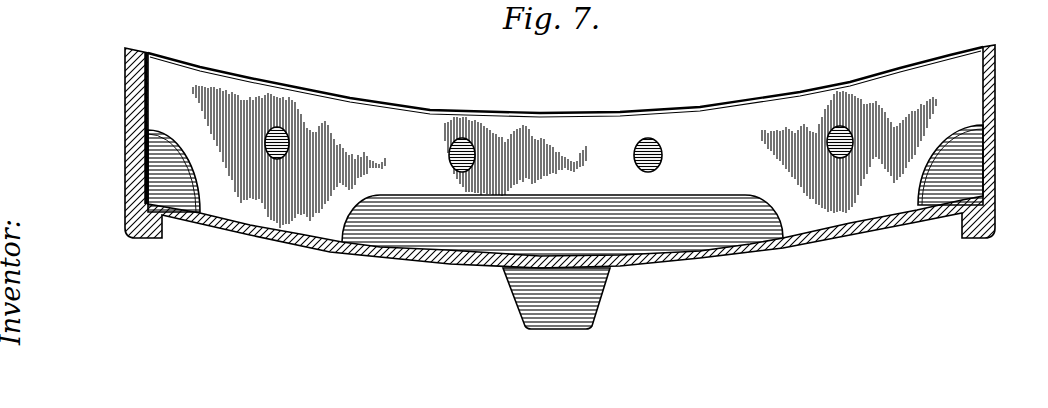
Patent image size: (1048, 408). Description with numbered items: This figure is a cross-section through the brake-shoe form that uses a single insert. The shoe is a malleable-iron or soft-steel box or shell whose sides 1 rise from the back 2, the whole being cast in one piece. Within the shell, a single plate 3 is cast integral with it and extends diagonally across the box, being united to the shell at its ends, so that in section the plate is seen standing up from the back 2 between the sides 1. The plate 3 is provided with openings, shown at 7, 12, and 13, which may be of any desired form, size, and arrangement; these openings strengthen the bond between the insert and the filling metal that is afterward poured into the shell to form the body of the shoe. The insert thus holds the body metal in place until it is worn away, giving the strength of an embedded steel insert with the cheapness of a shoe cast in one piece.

The sides 1 is at (133, 72).
The back 2 is at (663, 268).
The plate 3 is at (192, 80).
The opening 7 is at (284, 133).
The opening 12 is at (455, 237).
The opening 13 is at (150, 179).